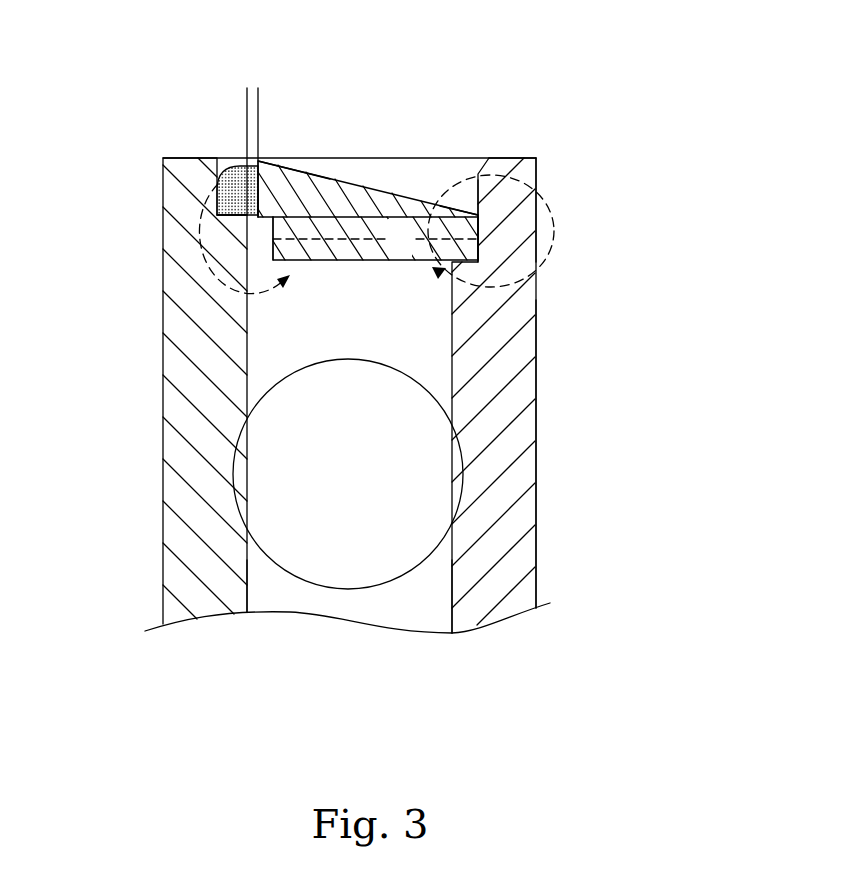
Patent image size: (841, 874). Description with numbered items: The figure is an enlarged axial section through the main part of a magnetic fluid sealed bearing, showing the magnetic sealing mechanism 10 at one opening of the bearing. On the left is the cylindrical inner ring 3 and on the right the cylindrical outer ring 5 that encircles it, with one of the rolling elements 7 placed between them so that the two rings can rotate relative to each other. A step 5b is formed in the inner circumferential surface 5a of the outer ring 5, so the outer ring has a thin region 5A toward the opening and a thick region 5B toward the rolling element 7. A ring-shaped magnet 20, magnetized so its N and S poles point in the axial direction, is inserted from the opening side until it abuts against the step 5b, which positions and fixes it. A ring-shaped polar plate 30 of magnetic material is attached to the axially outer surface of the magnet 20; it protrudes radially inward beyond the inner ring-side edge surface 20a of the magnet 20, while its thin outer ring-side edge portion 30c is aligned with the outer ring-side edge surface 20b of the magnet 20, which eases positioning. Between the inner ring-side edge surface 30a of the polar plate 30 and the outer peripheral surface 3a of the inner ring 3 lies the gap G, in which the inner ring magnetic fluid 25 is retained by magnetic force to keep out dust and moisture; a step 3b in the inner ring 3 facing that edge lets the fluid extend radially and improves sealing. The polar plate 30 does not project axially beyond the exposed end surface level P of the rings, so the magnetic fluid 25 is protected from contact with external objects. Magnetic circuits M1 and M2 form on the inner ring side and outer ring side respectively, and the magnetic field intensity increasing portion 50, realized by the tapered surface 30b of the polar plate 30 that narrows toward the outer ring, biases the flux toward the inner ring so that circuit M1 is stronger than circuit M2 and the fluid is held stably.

The magnetic sealing mechanism 10 is at (148, 75).
The exposed end surface level P is at (170, 158).
The inner ring 3 is at (170, 438).
The outer peripheral surface of the inner ring 3a is at (247, 589).
The step 3b is at (247, 238).
The outer ring 5 is at (525, 547).
The inner circumferential surface of the outer ring 5a is at (450, 586).
The step 5b is at (540, 229).
The thin region 5A is at (552, 177).
The thick region 5B is at (556, 452).
The rolling element 7 is at (440, 500).
The gap G is at (222, 93).
The inner ring magnetic fluid 25 is at (232, 158).
The polar plate 30 is at (386, 192).
The inner ring-side edge surface of the polar plate 30a is at (221, 192).
The tapered surface 30b is at (325, 158).
The edge portion 30c is at (496, 192).
The magnetic field intensity increasing portion 50 is at (412, 184).
The magnet 20 is at (376, 262).
The inner ring-side edge surface of the magnet 20a is at (273, 252).
The outer ring-side edge surface of the magnet 20b is at (478, 224).
The magnetic circuit M1 is at (246, 251).
The magnetic circuit M2 is at (509, 235).